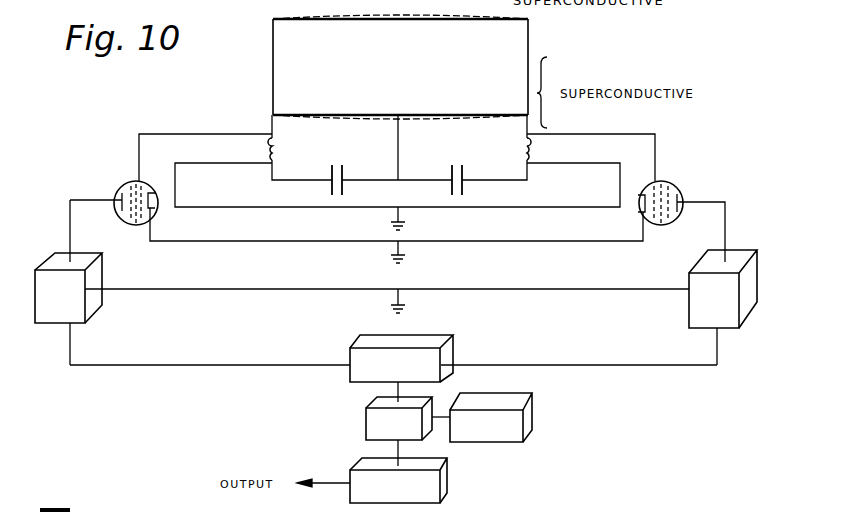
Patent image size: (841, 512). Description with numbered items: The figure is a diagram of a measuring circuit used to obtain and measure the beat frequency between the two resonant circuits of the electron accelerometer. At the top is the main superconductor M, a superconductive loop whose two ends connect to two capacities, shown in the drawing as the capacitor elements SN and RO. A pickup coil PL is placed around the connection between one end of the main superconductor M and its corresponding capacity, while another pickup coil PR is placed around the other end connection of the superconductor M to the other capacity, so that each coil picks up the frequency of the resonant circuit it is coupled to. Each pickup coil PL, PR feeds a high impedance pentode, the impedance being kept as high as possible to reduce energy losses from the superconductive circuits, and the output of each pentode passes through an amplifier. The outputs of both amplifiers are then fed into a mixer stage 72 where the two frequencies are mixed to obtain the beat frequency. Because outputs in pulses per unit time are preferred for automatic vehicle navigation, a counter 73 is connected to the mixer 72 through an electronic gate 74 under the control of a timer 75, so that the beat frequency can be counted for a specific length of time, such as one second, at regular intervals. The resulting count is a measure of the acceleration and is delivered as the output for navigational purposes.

The main superconductor M is at (508, 60).
The pickup coil PL is at (277, 154).
The pickup coil PR is at (521, 150).
The capacitor SN is at (343, 172).
The capacitor RO is at (463, 190).
The mixer stage 72 is at (453, 352).
The counter 73 is at (447, 489).
The electronic gate 74 is at (366, 420).
The timer 75 is at (525, 418).